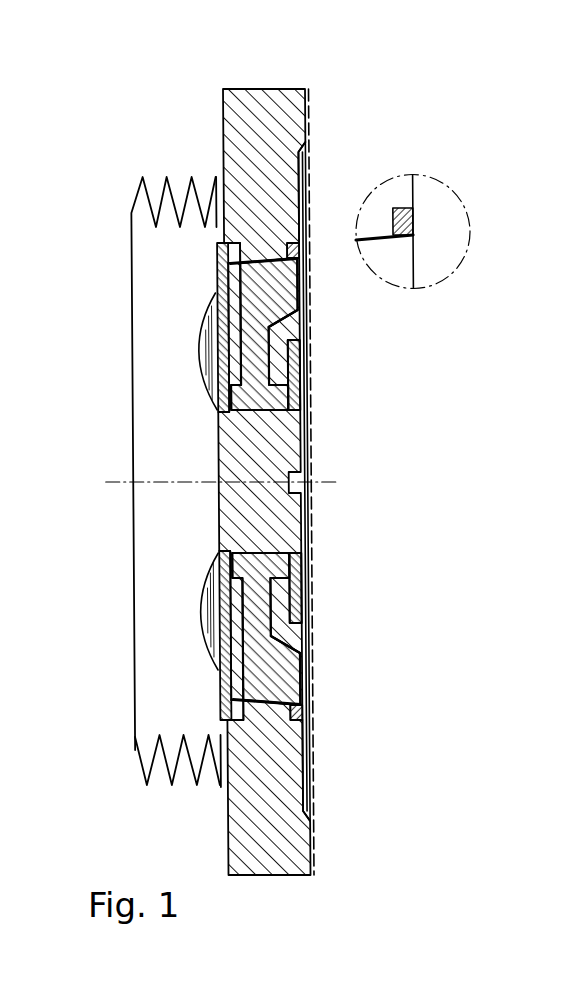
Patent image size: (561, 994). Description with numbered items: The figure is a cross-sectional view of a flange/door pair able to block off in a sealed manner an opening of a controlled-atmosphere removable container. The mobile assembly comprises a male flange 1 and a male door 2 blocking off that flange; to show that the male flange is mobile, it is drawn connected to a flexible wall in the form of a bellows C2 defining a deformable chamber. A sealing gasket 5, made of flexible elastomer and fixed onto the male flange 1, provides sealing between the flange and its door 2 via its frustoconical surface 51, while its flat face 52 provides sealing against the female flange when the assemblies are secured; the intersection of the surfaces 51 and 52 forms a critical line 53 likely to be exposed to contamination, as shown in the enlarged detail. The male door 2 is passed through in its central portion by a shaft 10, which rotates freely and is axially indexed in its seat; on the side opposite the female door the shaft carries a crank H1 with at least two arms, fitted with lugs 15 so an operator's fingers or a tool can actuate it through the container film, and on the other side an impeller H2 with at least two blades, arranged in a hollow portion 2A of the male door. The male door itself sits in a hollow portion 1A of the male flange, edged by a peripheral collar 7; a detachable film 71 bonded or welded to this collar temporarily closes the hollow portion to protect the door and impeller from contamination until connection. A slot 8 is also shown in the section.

The male flange 1 is at (262, 110).
The peripheral collar 7 is at (309, 104).
The film 71 is at (311, 126).
The hollow portion of the male flange 1A is at (304, 148).
The slot 8 is at (233, 252).
The sealing gasket 5 is at (294, 243).
The frustoconical surface 51 is at (402, 240).
The flat face 52 is at (418, 222).
The critical line 53 is at (420, 240).
The male door 2 is at (284, 297).
The hollow portion of the male door 2A is at (283, 330).
The impeller H2 is at (289, 368).
The crank H1 is at (222, 259).
The lugs 15 is at (207, 338).
The shaft 10 is at (245, 508).
The bellows C2 is at (153, 188).